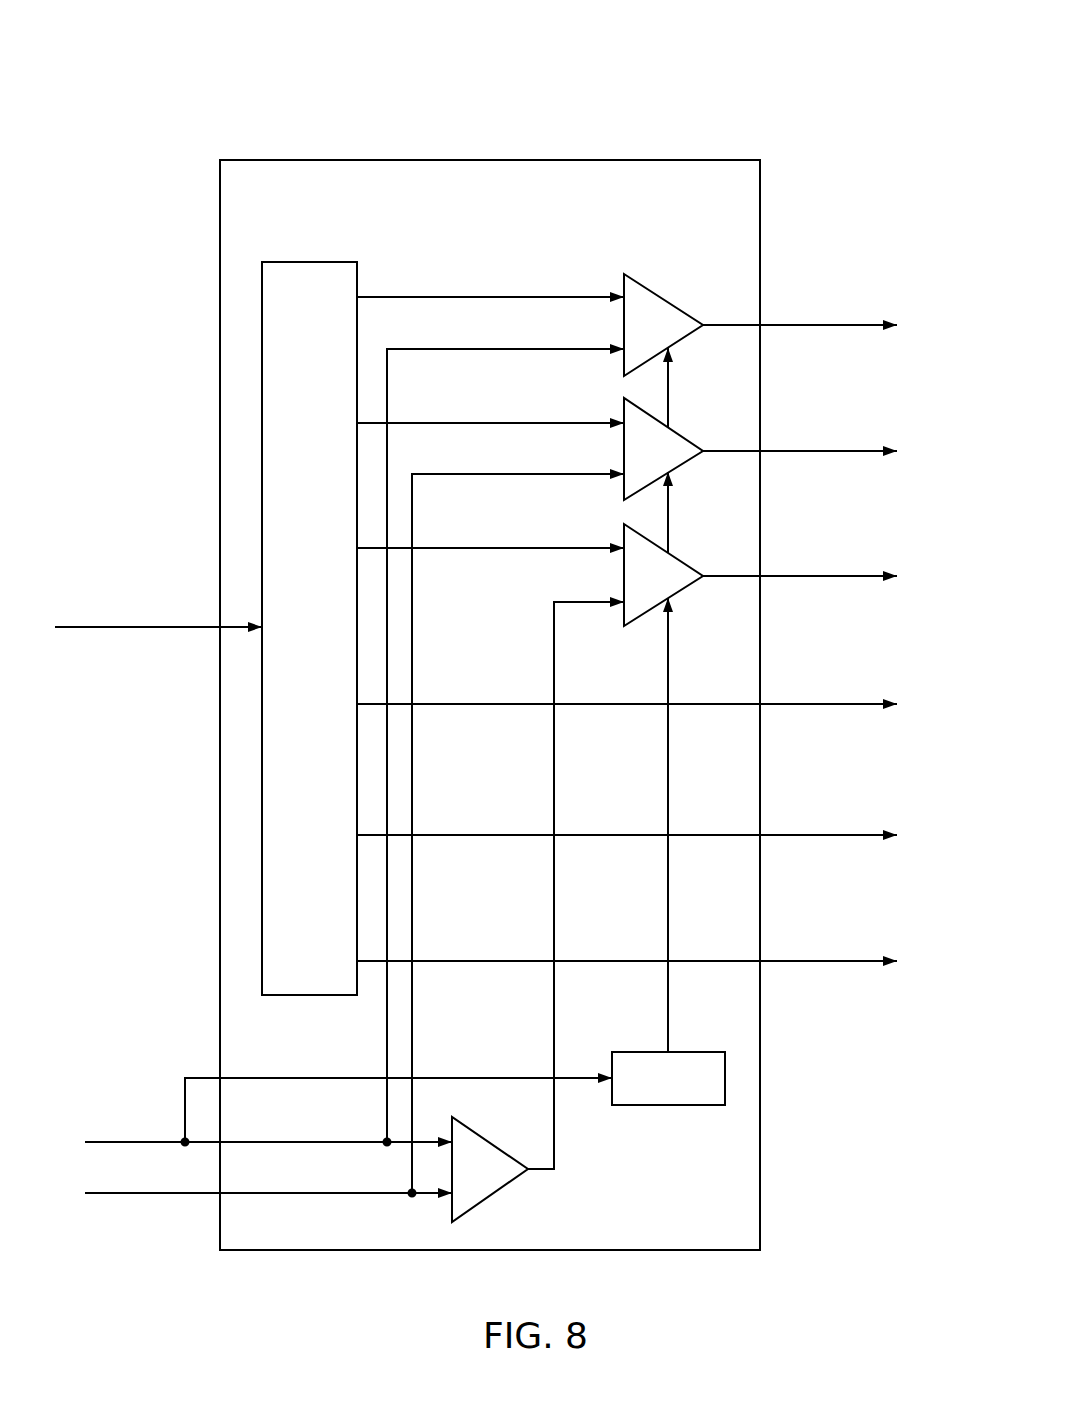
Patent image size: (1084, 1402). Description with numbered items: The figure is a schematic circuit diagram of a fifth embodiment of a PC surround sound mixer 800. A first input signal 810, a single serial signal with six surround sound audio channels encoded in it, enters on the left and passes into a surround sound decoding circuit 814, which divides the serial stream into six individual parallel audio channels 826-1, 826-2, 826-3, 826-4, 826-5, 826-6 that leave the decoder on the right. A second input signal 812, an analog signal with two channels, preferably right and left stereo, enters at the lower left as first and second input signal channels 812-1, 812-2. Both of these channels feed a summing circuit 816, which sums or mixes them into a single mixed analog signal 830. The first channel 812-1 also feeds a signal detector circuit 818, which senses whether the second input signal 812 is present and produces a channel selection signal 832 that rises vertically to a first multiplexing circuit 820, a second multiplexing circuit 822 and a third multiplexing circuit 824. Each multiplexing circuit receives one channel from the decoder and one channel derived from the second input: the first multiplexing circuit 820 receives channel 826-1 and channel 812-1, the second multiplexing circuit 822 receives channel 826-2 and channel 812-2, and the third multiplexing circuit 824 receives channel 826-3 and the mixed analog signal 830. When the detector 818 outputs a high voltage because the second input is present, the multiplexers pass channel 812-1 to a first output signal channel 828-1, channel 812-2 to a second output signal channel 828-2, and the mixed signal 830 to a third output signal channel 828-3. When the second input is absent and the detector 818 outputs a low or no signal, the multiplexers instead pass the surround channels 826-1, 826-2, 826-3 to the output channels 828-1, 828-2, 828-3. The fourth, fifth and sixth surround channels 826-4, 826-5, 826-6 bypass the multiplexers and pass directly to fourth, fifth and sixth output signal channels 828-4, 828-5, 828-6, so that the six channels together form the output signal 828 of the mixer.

The PC surround sound mixer 800 is at (748, 124).
The first input signal 810 is at (152, 630).
The second input signal 812 is at (125, 1050).
The first input signal channel 812-1 is at (126, 1140).
The second input signal channel 812-2 is at (122, 1205).
The surround sound decoding circuit 814 is at (278, 316).
The summing circuit 816 is at (498, 1178).
The signal detector circuit 818 is at (712, 1097).
The first multiplexing circuit 820 is at (677, 318).
The second multiplexing circuit 822 is at (677, 444).
The third multiplexing circuit 824 is at (677, 569).
The first surround sound signal channel 826-1 is at (413, 296).
The second surround sound signal channel 826-2 is at (425, 421).
The third surround sound signal channel 826-3 is at (462, 550).
The fourth surround sound signal channel 826-4 is at (461, 706).
The fifth surround sound signal channel 826-5 is at (462, 837).
The sixth surround sound signal channel 826-6 is at (465, 963).
The output signal 828 is at (849, 978).
The first output signal channel 828-1 is at (825, 323).
The second output signal channel 828-2 is at (825, 449).
The third output signal channel 828-3 is at (825, 574).
The fourth output signal channel 828-4 is at (825, 702).
The fifth output signal channel 828-5 is at (825, 833).
The sixth output signal channel 828-6 is at (825, 959).
The mixed analog signal 830 is at (556, 1142).
The channel selection signal 832 is at (668, 808).